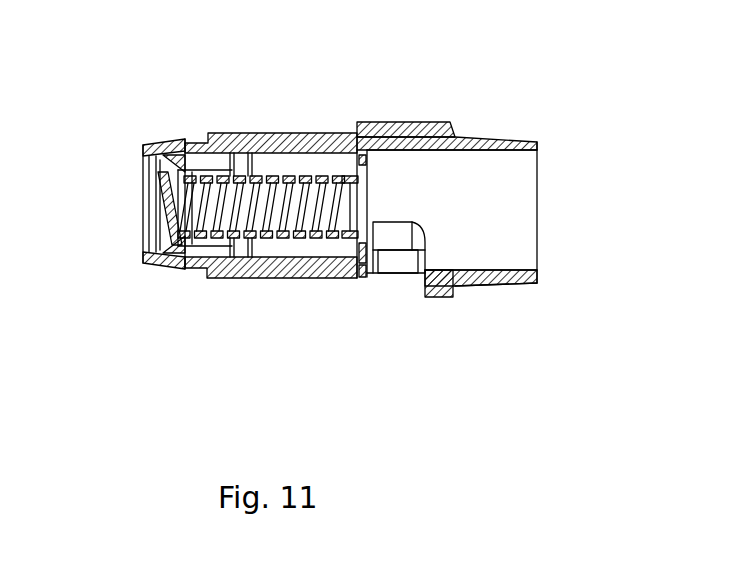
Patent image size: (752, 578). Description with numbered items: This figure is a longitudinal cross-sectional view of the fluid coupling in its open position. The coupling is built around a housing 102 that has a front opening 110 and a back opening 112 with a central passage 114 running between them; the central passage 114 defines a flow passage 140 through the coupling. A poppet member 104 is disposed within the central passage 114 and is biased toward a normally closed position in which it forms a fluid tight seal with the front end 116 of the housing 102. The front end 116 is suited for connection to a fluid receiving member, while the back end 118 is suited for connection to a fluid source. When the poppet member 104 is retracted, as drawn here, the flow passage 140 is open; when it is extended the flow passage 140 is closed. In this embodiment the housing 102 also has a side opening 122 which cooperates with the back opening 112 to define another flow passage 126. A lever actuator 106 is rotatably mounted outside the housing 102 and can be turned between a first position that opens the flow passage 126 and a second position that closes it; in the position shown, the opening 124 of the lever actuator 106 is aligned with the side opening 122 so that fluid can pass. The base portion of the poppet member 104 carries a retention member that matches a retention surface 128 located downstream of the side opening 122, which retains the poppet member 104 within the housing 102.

The housing 102 is at (322, 82).
The poppet member 104 is at (220, 276).
The lever actuator 106 is at (388, 123).
The front opening 110 is at (140, 198).
The back opening 112 is at (541, 207).
The central passage 114 is at (261, 207).
The front end 116 is at (164, 270).
The back end 118 is at (510, 283).
The side opening 122 is at (382, 262).
The opening of the lever actuator 124 is at (395, 284).
The flow passage 126 is at (452, 213).
The retention surface 128 is at (348, 137).
The flow passage 140 is at (251, 200).